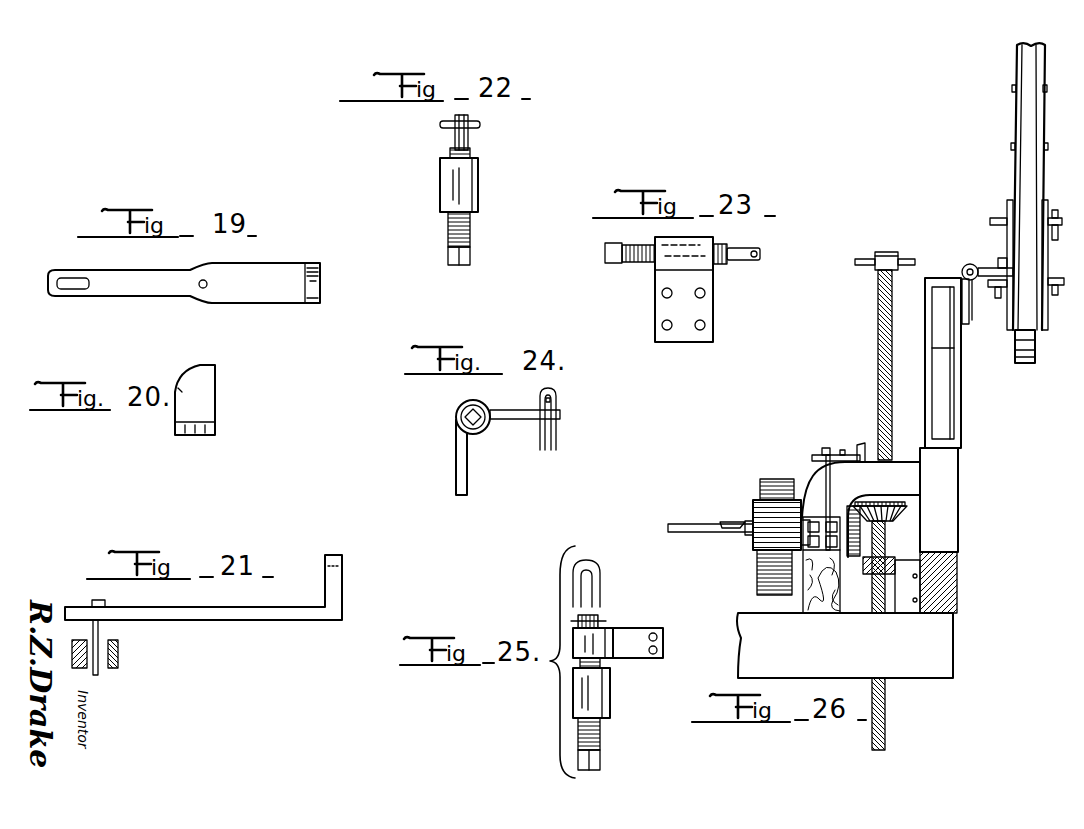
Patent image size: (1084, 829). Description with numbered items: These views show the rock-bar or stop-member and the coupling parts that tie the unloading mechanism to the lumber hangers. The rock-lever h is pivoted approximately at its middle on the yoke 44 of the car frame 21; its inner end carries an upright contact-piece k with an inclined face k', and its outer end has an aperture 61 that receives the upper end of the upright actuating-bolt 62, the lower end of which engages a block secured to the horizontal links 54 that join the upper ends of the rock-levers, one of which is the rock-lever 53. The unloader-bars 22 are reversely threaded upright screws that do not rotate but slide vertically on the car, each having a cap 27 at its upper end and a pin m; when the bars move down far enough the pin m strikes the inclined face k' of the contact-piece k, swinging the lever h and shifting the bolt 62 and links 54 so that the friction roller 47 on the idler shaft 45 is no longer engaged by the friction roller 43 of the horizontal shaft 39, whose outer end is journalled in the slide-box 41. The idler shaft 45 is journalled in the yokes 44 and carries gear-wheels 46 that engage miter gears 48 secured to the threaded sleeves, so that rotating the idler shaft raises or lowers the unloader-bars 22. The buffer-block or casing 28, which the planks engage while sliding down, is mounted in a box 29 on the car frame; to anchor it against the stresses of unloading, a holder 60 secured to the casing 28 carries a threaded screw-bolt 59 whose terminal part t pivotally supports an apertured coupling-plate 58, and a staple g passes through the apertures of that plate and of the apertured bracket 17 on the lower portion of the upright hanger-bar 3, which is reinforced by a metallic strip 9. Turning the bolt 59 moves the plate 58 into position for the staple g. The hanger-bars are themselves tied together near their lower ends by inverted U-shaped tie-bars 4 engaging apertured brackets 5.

In FIG. 26, the hanger-bar 3 is at (1032, 108).
In FIG. 26, the metallic reinforcing-strip 9 is at (1020, 126).
In FIG. 26, the tie-bar 4 is at (1055, 210).
In FIG. 26, the apertured bracket 5 is at (1062, 228).
In FIG. 26, the apertured bracket 17 is at (1054, 296).
In FIG. 26, the car frame 21 is at (746, 658).
In FIG. 26, the unloader-bar 22 is at (886, 690).
In FIG. 26, the cap 27 is at (887, 252).
In FIG. 26, the buffer-block 28 is at (963, 376).
In FIG. 26, the box 29 is at (958, 456).
In FIG. 26, the horizontal shaft 39 is at (731, 521).
In FIG. 26, the slide-box 41 is at (812, 552).
In FIG. 26, the friction roller 43 is at (770, 536).
In FIG. 26, the yoke 44 is at (905, 479).
In FIG. 26, the idler shaft 45 is at (690, 536).
In FIG. 26, the gear-wheel 46 is at (860, 566).
In FIG. 26, the friction roller 47 is at (771, 486).
In FIG. 26, the miter gear 48 is at (907, 513).
In FIG. 26, the rock-lever 53 is at (832, 496).
In FIG. 21, the horizontal link 54 is at (78, 670).
In FIG. 26, the horizontal link 54 is at (820, 462).
In FIG. 24, the apertured coupling-plate 58 is at (515, 420).
In FIG. 25, the apertured coupling-plate 58 is at (633, 638).
In FIG. 26, the apertured coupling-plate 58 is at (992, 267).
In FIG. 22, the screw-bolt 59 is at (470, 233).
In FIG. 23, the screw-bolt 59 is at (640, 263).
In FIG. 24, the screw-bolt 59 is at (456, 417).
In FIG. 25, the screw-bolt 59 is at (600, 733).
In FIG. 26, the screw-bolt 59 is at (968, 264).
In FIG. 22, the holder 60 is at (480, 189).
In FIG. 23, the holder 60 is at (678, 262).
In FIG. 24, the holder 60 is at (480, 433).
In FIG. 25, the holder 60 is at (612, 696).
In FIG. 26, the holder 60 is at (962, 270).
In FIG. 19, the aperture 61 is at (70, 290).
In FIG. 21, the actuating-bolt 62 is at (100, 627).
In FIG. 26, the actuating-bolt 62 is at (823, 455).
In FIG. 19, the rock-lever h is at (262, 301).
In FIG. 20, the rock-lever h is at (193, 437).
In FIG. 21, the rock-lever h is at (225, 621).
In FIG. 26, the rock-lever h is at (833, 455).
In FIG. 19, the contact-piece k is at (326, 303).
In FIG. 20, the contact-piece k is at (213, 400).
In FIG. 21, the contact-piece k is at (354, 572).
In FIG. 26, the contact-piece k is at (856, 429).
In FIG. 19, the inclined face k' is at (338, 262).
In FIG. 20, the inclined face k' is at (164, 363).
In FIG. 24, the staple g is at (560, 431).
In FIG. 25, the staple g is at (600, 591).
In FIG. 26, the staple g is at (998, 261).
In FIG. 26, the pin m is at (868, 268).
In FIG. 22, the terminal part t is at (470, 136).
In FIG. 23, the terminal part t is at (742, 262).